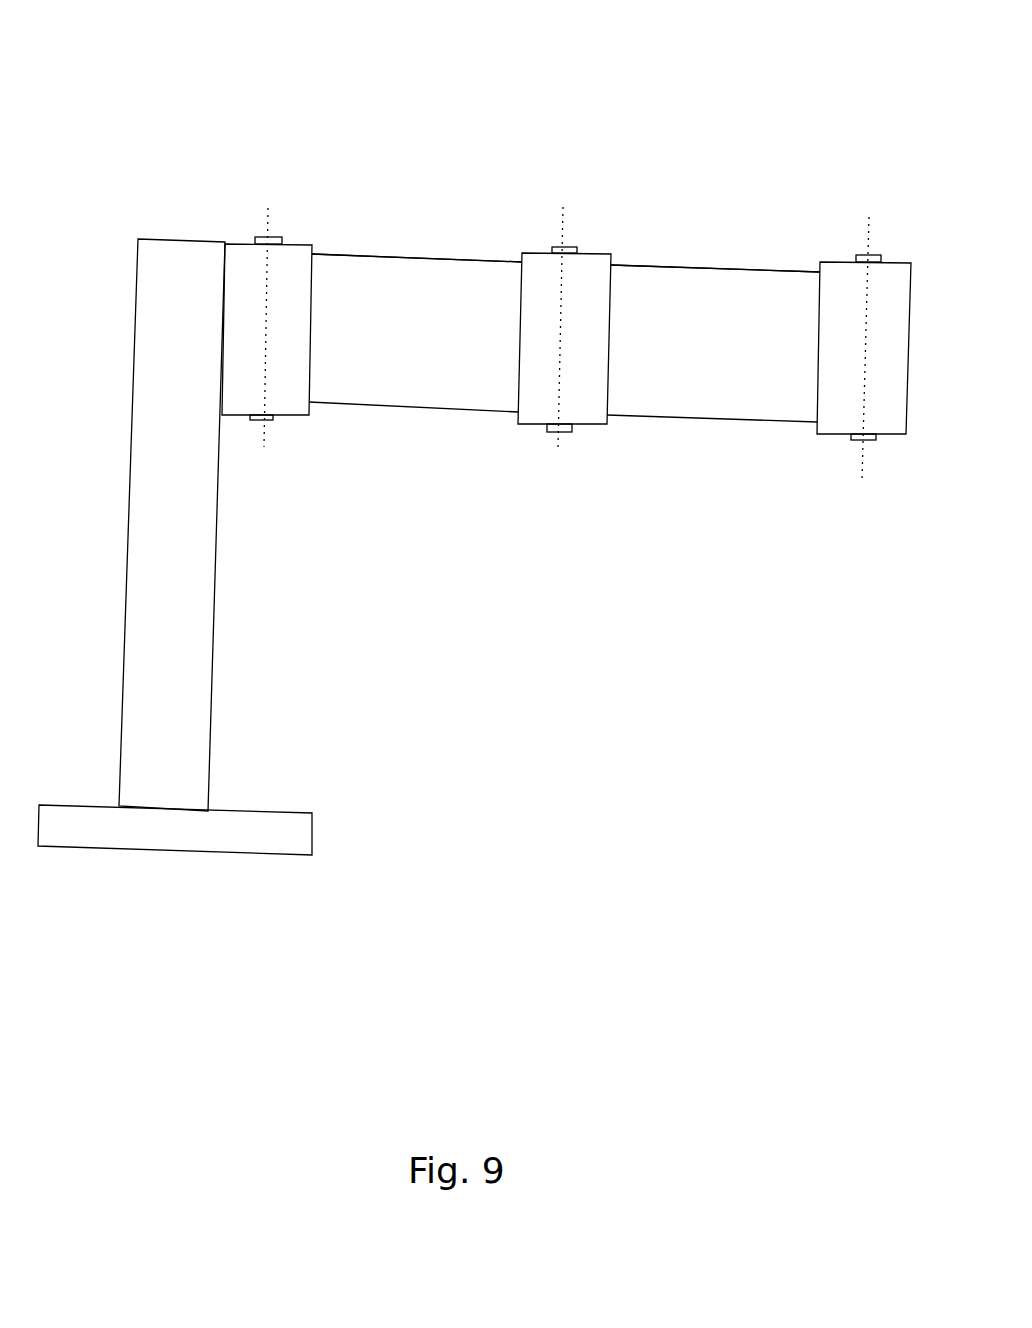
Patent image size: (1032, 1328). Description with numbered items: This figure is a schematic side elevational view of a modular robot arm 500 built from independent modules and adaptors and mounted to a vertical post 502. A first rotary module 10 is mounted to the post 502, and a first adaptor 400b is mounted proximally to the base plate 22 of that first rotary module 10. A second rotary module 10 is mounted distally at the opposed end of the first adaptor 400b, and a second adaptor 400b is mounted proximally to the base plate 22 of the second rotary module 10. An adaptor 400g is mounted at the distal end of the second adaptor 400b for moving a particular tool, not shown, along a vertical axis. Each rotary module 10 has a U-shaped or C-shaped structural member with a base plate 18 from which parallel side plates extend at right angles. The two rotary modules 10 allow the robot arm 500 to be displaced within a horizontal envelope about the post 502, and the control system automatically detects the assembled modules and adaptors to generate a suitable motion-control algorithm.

The modular robot arm 500 is at (426, 127).
The vertical post 502 is at (164, 298).
The base plate 18 is at (225, 240).
The rotary module 10 is at (290, 239).
The base plate 22 is at (313, 295).
The adaptor 400b is at (418, 250).
The adaptor 400g is at (850, 234).